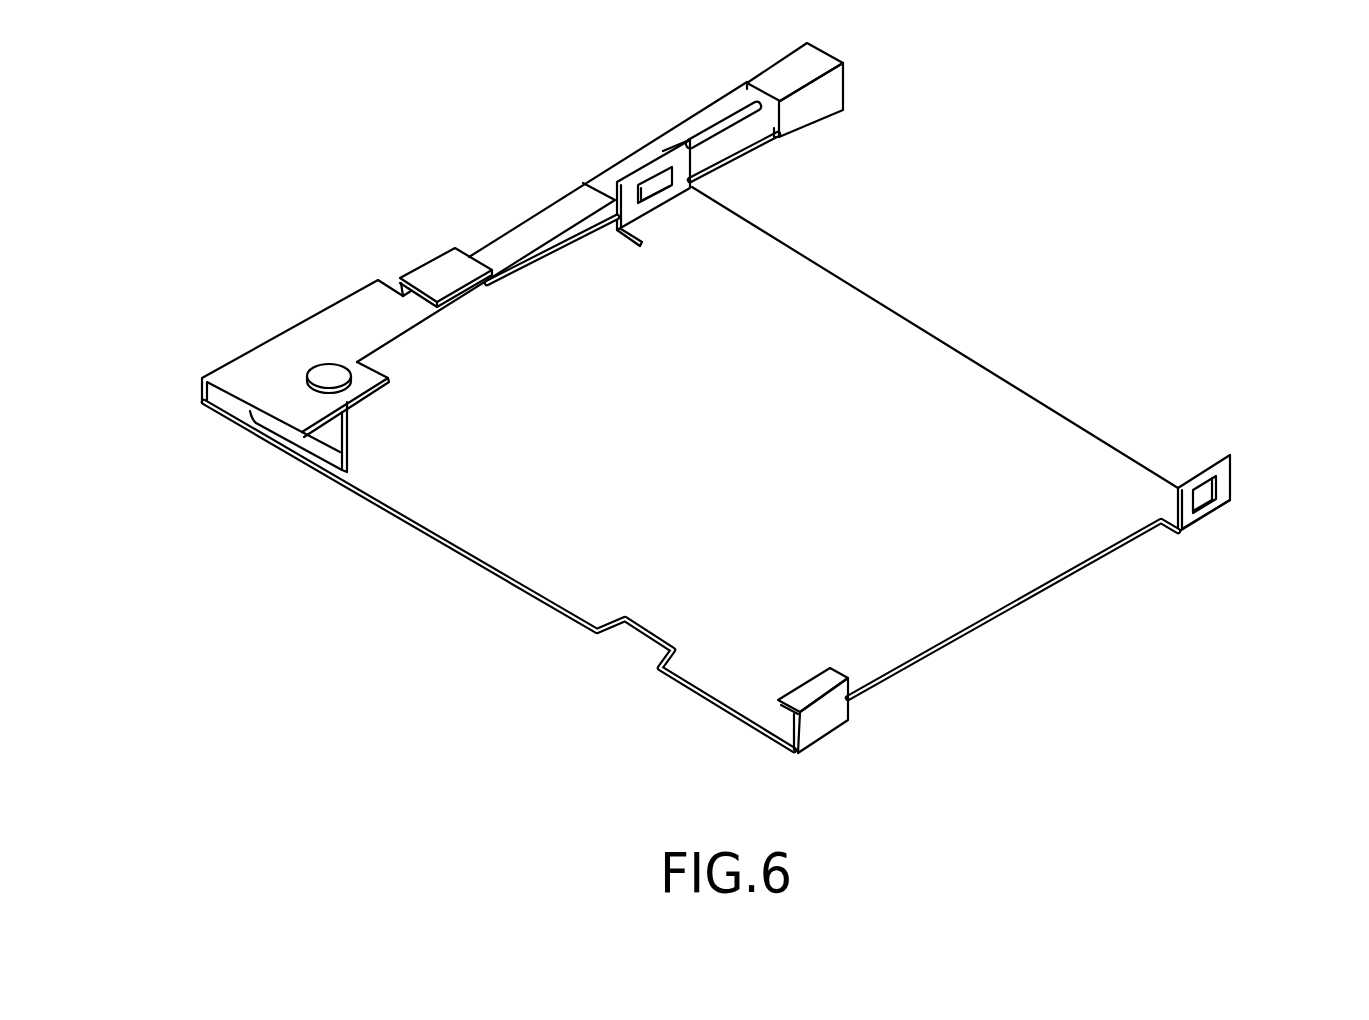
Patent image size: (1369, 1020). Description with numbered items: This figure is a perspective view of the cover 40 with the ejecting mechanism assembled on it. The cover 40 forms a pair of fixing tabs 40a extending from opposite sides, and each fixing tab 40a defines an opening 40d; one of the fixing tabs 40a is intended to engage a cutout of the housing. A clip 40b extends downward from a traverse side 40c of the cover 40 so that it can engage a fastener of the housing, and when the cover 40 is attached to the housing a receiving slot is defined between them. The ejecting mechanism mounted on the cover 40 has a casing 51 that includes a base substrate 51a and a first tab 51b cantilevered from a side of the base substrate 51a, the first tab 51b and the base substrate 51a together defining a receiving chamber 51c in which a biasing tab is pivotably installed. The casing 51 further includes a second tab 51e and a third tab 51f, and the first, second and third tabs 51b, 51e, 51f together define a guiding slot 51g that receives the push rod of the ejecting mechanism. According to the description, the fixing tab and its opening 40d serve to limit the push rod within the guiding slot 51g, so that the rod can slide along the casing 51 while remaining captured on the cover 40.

The cover 40 is at (1010, 369).
The fixing tab 40a is at (1228, 473).
The clip 40b is at (834, 713).
The traverse side 40c is at (1060, 580).
The opening 40d is at (683, 163).
The casing 51 is at (385, 337).
The base substrate 51a is at (303, 467).
The first tab 51b is at (280, 360).
The receiving chamber 51c is at (228, 407).
The second tab 51e is at (445, 270).
The third tab 51f is at (572, 205).
The guiding slot 51g is at (539, 263).